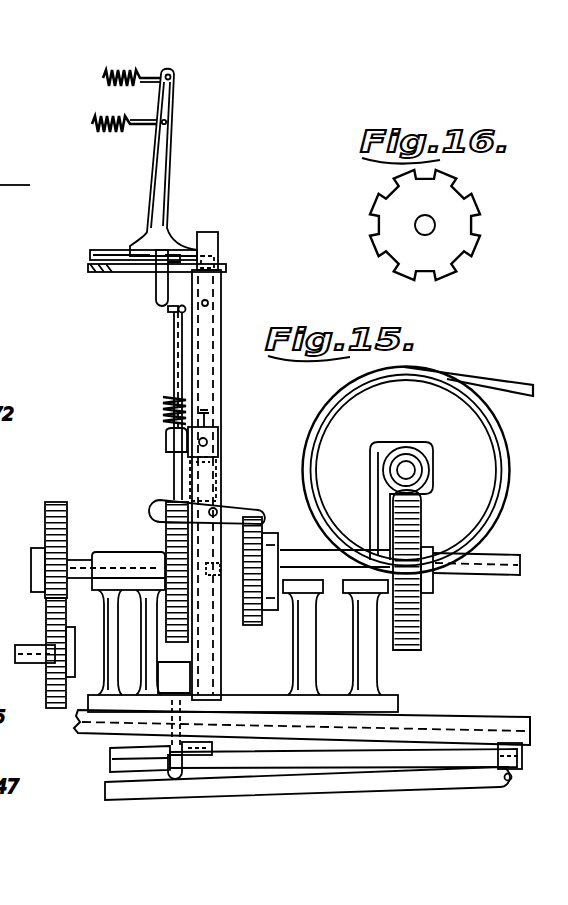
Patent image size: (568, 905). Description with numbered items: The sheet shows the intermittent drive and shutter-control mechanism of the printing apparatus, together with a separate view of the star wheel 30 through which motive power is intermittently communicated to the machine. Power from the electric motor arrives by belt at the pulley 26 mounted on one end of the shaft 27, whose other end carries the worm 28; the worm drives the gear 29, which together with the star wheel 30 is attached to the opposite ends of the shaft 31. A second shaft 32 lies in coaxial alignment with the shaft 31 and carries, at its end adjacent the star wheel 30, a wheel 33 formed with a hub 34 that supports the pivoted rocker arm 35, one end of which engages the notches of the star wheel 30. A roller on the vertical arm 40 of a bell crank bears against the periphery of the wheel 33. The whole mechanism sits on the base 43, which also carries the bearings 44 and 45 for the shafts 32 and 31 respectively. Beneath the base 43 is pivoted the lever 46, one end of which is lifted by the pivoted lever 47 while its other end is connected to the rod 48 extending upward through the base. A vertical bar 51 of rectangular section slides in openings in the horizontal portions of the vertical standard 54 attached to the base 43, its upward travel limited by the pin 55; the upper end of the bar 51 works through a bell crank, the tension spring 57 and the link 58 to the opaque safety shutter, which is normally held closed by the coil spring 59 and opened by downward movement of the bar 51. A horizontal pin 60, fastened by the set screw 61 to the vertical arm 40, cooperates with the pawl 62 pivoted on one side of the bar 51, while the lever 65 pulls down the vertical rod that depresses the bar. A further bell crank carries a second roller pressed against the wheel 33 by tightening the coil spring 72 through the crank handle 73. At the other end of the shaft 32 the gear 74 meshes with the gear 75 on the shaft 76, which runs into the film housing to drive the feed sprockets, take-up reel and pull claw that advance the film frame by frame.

In FIG. 15, the pulley 26 is at (496, 428).
In FIG. 15, the shaft 27 is at (412, 468).
In FIG. 15, the worm 28 is at (429, 478).
In FIG. 15, the gear 29 is at (424, 512).
In FIG. 15, the star wheel 30 is at (258, 542).
In FIG. 16, the star wheel 30 is at (392, 248).
In FIG. 15, the shaft 31 is at (431, 578).
In FIG. 15, the shaft 32 is at (76, 560).
In FIG. 15, the wheel 33 is at (166, 545).
In FIG. 15, the hub 34 is at (221, 569).
In FIG. 15, the rocker arm 35 is at (232, 510).
In FIG. 15, the vertical arm 40 is at (165, 456).
In FIG. 15, the base 43 is at (432, 716).
In FIG. 15, the bearing 44 is at (110, 620).
In FIG. 15, the bearing 45 is at (300, 658).
In FIG. 15, the lever 46 is at (110, 758).
In FIG. 15, the pivoted lever 47 is at (131, 786).
In FIG. 15, the rod 48 is at (176, 724).
In FIG. 15, the vertical bar 51 is at (219, 242).
In FIG. 15, the vertical standard 54 is at (222, 378).
In FIG. 15, the pin 55 is at (208, 304).
In FIG. 15, the tension spring 57 is at (140, 77).
In FIG. 15, the link 58 is at (166, 201).
In FIG. 15, the coil spring 59 is at (127, 121).
In FIG. 15, the horizontal pin 60 is at (208, 441).
In FIG. 15, the set screw 61 is at (210, 418).
In FIG. 15, the pawl 62 is at (173, 481).
In FIG. 15, the lever 65 is at (294, 752).
In FIG. 15, the coil spring 72 is at (168, 400).
In FIG. 15, the crank handle 73 is at (155, 302).
In FIG. 15, the gear 74 is at (58, 502).
In FIG. 15, the gear 75 is at (47, 690).
In FIG. 15, the shaft 76 is at (38, 648).